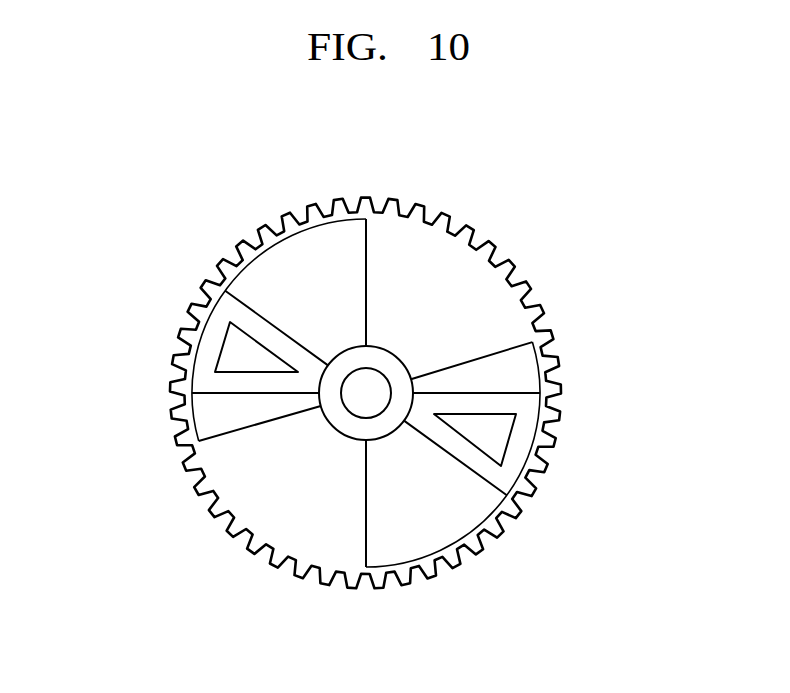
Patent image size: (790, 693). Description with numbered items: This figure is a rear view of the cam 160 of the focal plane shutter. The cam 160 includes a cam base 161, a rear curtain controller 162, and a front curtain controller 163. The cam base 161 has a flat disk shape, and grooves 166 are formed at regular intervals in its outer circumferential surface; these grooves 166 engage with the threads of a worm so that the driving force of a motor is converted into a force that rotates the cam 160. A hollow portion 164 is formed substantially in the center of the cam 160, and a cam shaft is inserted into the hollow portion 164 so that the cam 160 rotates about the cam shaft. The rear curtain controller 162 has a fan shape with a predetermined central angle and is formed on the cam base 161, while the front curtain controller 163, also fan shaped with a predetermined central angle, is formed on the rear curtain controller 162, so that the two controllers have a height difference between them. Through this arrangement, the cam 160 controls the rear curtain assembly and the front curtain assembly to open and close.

The cam 160 is at (537, 201).
The cam base 161 is at (301, 508).
The rear curtain controller 162 is at (295, 277).
The front curtain controller 163 is at (213, 342).
The hollow portion 164 is at (360, 397).
The grooves 166 is at (421, 209).